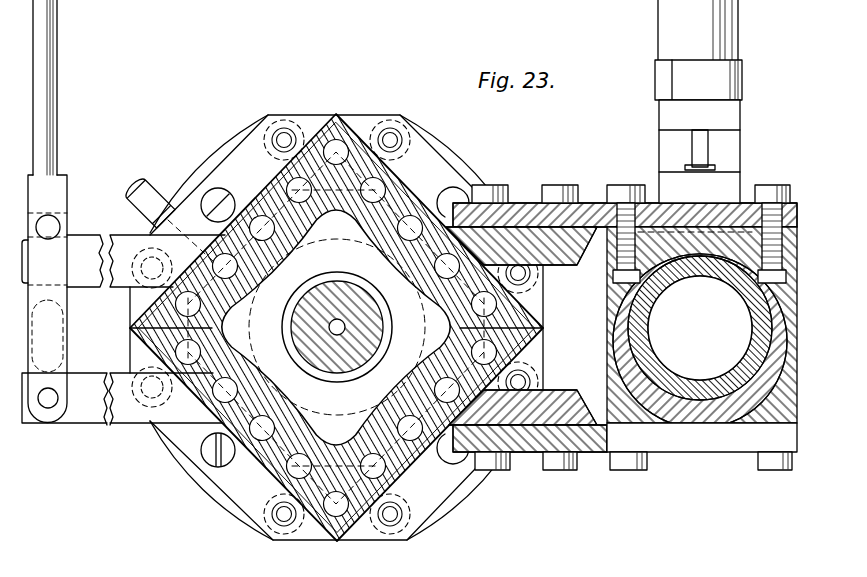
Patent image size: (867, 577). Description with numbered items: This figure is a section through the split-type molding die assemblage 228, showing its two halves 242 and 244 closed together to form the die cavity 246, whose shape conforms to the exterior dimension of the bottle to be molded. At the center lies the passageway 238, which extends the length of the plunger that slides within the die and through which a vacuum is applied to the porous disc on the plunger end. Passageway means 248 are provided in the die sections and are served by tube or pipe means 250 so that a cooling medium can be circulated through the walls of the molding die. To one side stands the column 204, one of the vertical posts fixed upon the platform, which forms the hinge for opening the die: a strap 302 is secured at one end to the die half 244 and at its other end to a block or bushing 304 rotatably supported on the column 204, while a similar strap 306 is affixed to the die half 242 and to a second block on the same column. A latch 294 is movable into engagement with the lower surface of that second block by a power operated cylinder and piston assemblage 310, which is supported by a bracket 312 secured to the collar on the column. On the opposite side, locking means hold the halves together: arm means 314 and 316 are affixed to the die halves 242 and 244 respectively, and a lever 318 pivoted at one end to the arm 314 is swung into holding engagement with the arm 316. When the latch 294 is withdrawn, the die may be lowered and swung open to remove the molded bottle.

The column 204 is at (707, 401).
The molding die assemblage 228 is at (258, 481).
The passageway 238 is at (345, 327).
The molding die half 242 is at (401, 467).
The molding die half 244 is at (400, 181).
The die cavity 246 is at (298, 411).
The passageway means 248 is at (258, 222).
The tube or pipe means 250 is at (156, 186).
The latch 294 is at (686, 167).
The strap 302 is at (528, 206).
The block or bushing 304 is at (715, 228).
The strap 306 is at (549, 453).
The power operated cylinder and piston assemblage 310 is at (658, 16).
The bracket 312 is at (660, 178).
The arm means 314 is at (80, 418).
The arm means 316 is at (84, 239).
The lever 318 is at (68, 322).